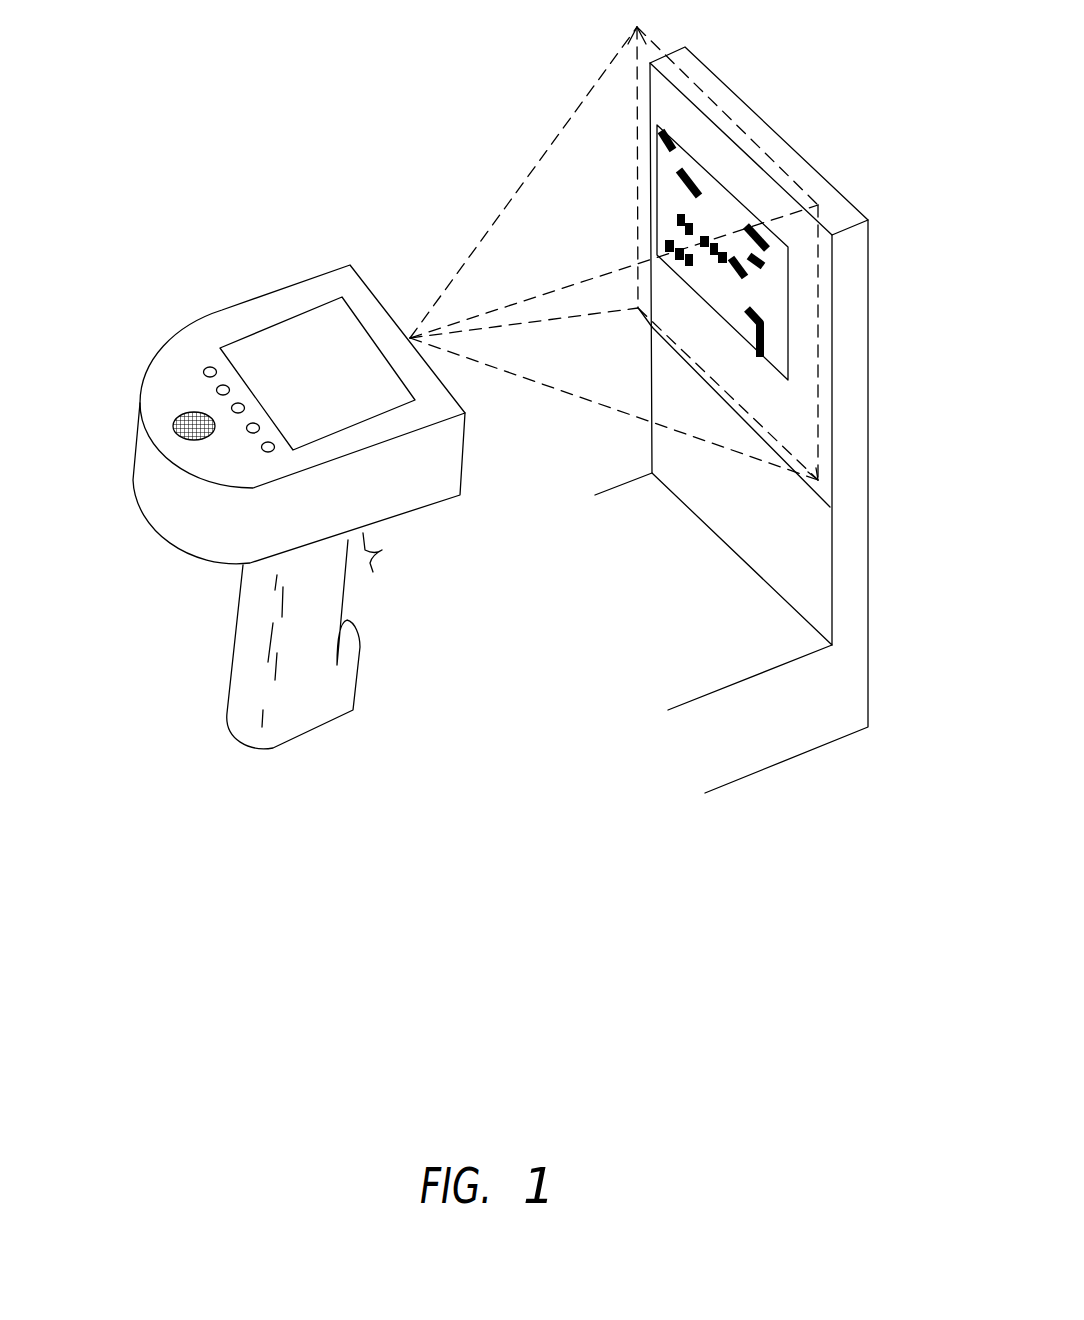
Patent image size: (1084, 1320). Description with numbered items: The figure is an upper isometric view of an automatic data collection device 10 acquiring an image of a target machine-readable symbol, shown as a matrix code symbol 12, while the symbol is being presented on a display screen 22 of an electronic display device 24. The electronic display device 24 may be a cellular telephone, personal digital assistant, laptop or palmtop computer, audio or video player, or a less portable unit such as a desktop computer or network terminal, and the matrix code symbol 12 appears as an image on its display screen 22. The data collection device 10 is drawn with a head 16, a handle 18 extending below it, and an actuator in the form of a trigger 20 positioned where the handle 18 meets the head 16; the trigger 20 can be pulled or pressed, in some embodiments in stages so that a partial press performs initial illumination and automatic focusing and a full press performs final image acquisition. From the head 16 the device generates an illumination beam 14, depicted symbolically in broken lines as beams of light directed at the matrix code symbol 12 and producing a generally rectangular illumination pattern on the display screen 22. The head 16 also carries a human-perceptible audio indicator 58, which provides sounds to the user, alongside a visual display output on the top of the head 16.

The automatic data collection device 10 is at (230, 262).
The matrix code symbol 12 is at (733, 193).
The illumination beam 14 is at (618, 413).
The head 16 is at (175, 372).
The handle 18 is at (247, 643).
The trigger 20 is at (363, 555).
The display screen 22 is at (823, 333).
The electronic display device 24 is at (850, 442).
The audio indicator 58 is at (178, 434).